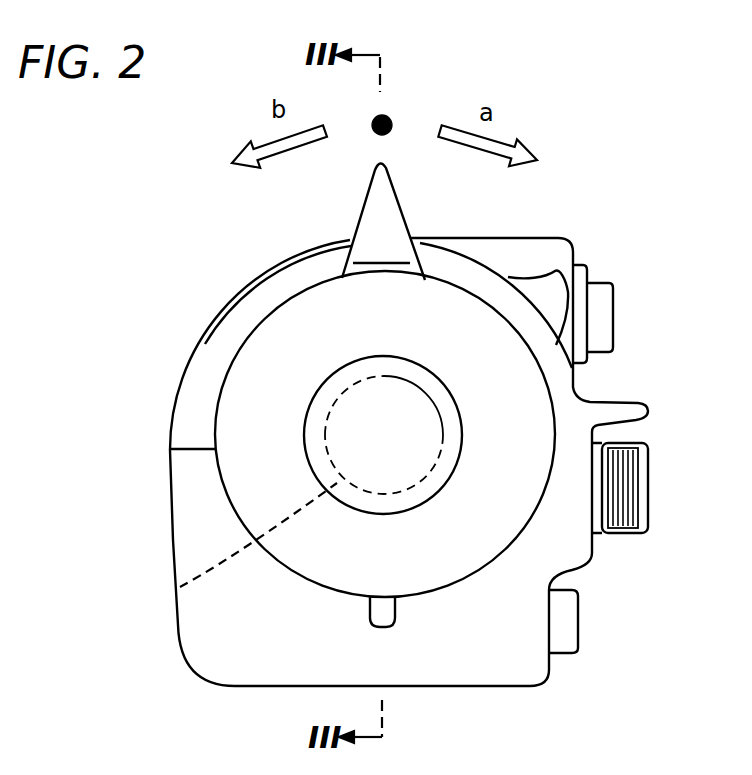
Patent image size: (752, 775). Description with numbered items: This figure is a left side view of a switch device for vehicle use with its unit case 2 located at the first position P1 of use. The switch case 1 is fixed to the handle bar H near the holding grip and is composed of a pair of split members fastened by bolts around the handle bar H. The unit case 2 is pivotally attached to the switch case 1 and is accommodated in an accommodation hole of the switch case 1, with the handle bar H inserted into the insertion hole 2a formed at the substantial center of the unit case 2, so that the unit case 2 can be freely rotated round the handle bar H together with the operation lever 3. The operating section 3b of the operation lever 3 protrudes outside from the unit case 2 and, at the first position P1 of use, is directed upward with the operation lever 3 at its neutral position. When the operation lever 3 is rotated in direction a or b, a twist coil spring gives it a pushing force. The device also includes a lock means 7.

The switch case 1 is at (533, 238).
The unit case 2 is at (245, 380).
The insertion hole 2a is at (327, 445).
The operation lever 3 is at (340, 259).
The operating section 3b is at (360, 207).
The lock means 7 is at (370, 608).
The handle bar H is at (180, 585).
The first position of use P1 is at (374, 117).